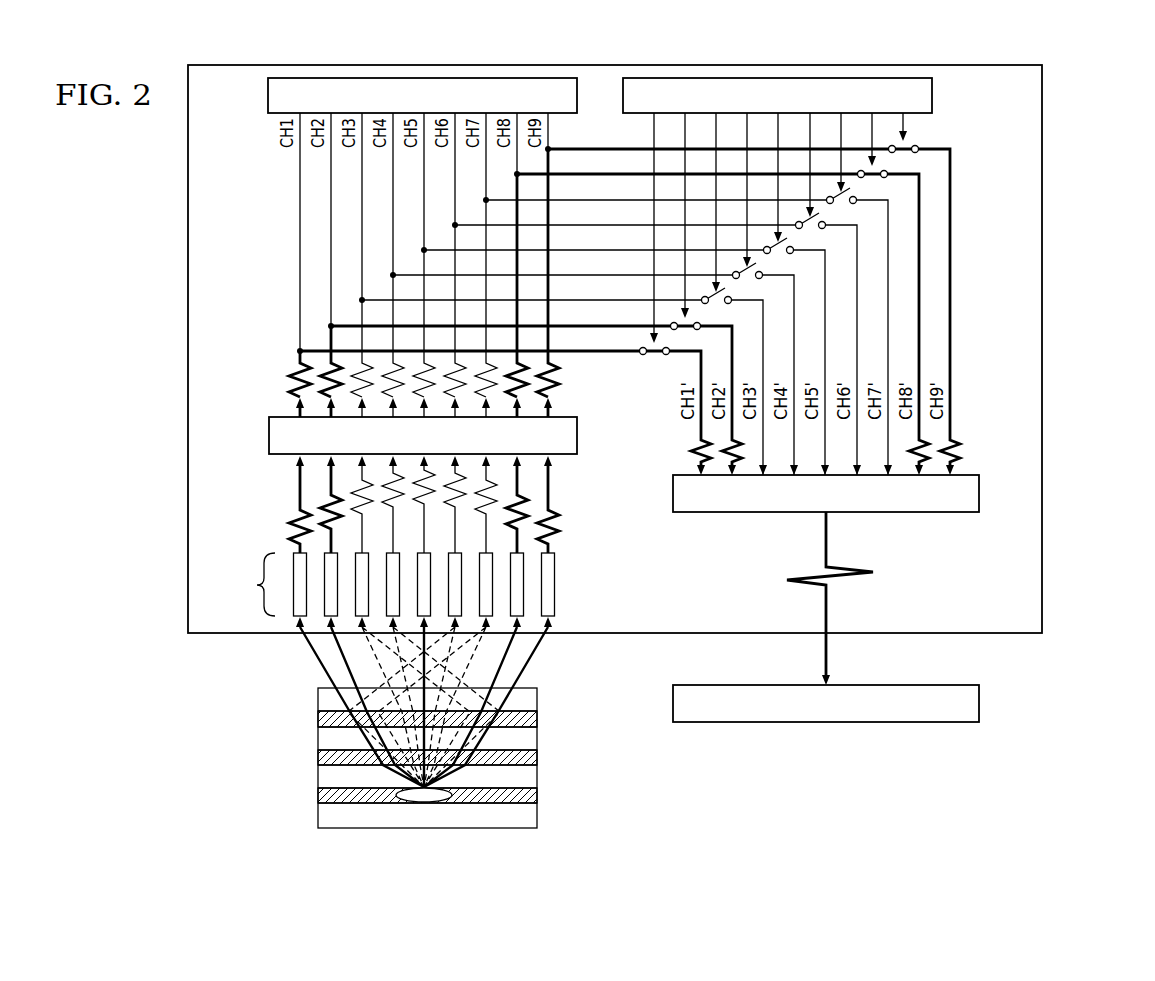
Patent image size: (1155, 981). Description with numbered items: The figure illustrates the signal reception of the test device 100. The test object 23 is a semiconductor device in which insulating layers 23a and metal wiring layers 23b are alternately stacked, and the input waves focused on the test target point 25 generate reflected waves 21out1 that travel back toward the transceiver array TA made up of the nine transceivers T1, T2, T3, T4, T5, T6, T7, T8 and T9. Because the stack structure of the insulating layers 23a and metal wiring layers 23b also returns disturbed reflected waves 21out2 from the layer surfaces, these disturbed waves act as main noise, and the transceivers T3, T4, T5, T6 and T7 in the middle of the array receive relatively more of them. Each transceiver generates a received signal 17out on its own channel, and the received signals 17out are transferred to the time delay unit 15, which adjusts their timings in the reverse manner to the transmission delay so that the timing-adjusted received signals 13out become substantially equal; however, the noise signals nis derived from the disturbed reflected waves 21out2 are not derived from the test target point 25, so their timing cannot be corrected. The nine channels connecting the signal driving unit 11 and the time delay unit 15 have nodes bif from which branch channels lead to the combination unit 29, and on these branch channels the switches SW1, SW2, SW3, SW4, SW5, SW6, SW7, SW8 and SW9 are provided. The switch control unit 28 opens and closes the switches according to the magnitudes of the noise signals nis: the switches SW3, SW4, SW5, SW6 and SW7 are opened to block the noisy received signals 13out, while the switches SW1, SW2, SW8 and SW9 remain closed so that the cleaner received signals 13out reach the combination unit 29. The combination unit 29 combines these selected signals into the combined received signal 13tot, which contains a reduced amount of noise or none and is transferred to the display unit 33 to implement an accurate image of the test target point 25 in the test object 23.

The test device 100 is at (1069, 130).
The signal driving unit 11 is at (268, 97).
The switch control unit 28 is at (932, 95).
The time delay unit 15 is at (269, 437).
The combination unit 29 is at (979, 493).
The display unit 33 is at (979, 703).
The timing-adjusted received signals 13out is at (292, 381).
The received signals 17out is at (292, 521).
The combined received signal 13tot is at (873, 572).
The noise signals nis is at (368, 512).
The nodes bif is at (549, 149).
The transducer array TA is at (396, 584).
The first transceiver T1 is at (290, 584).
The second transceiver T2 is at (321, 584).
The third transceiver T3 is at (352, 584).
The fourth transceiver T4 is at (383, 584).
The fifth transceiver T5 is at (414, 584).
The sixth transceiver T6 is at (445, 584).
The seventh transceiver T7 is at (476, 584).
The eighth transceiver T8 is at (507, 584).
The ninth transceiver T9 is at (538, 584).
The first switch SW1 is at (505, 407).
The second switch SW2 is at (536, 395).
The third switch SW3 is at (562, 381).
The fourth switch SW4 is at (593, 369).
The fifth switch SW5 is at (624, 356).
The sixth switch SW6 is at (656, 344).
The seventh switch SW7 is at (687, 331).
The eighth switch SW8 is at (723, 319).
The ninth switch SW9 is at (754, 306).
The reflected waves 21out1 is at (318, 650).
The disturbed reflected waves 21out2 is at (505, 663).
The test object 23 is at (400, 757).
The insulating layers 23a is at (318, 816).
The metal wiring layers 23b is at (318, 796).
The test target point 25 is at (505, 797).